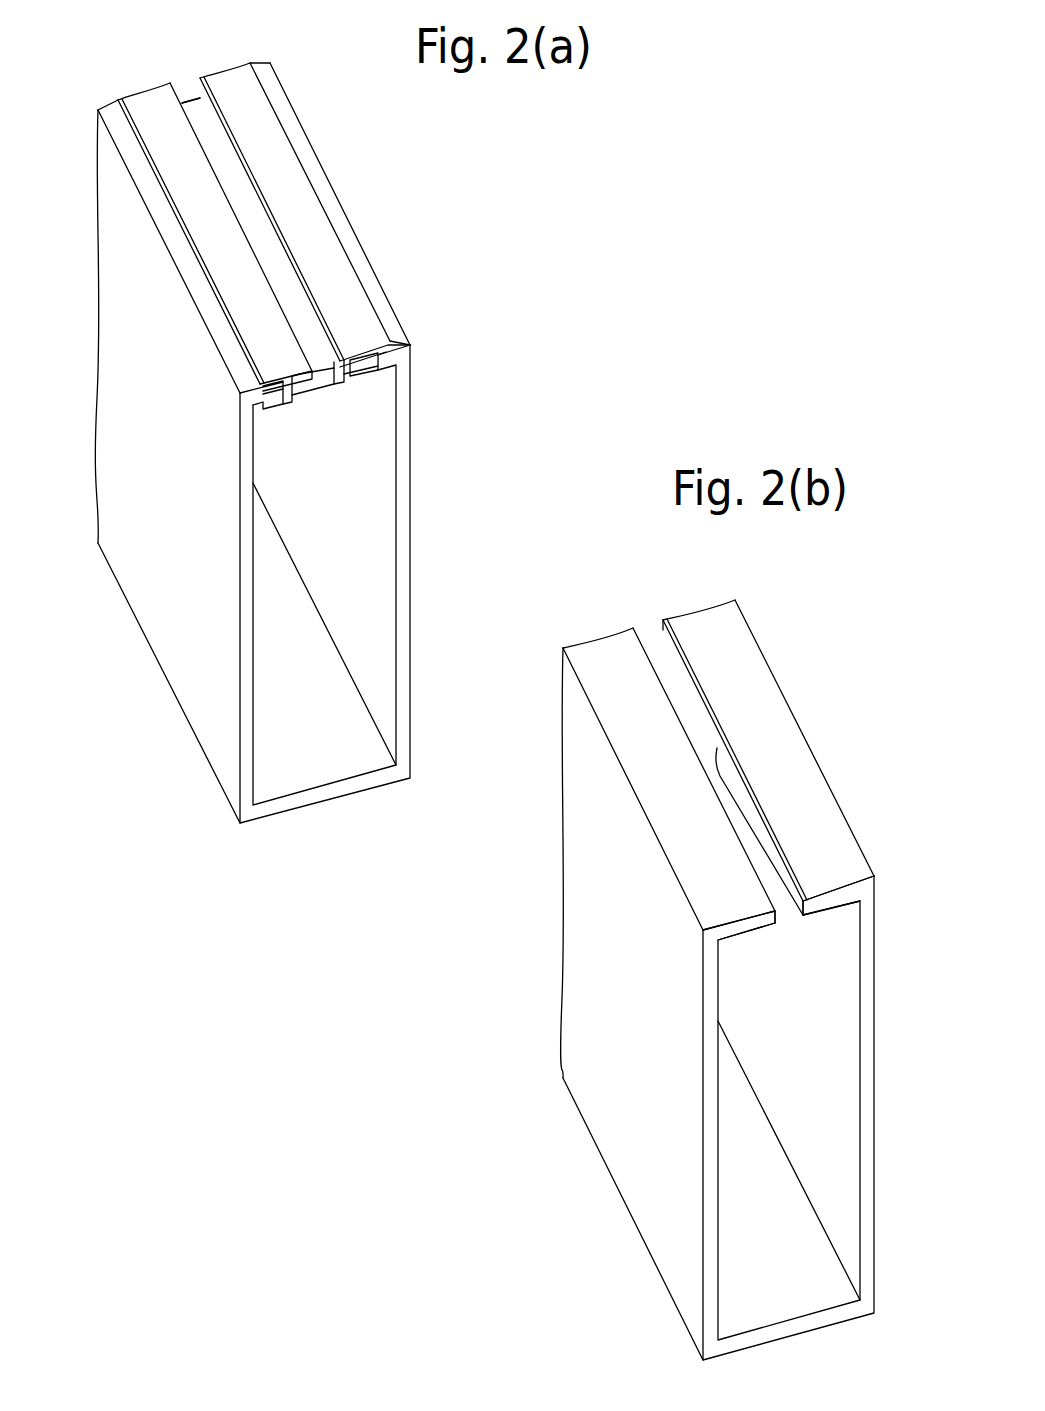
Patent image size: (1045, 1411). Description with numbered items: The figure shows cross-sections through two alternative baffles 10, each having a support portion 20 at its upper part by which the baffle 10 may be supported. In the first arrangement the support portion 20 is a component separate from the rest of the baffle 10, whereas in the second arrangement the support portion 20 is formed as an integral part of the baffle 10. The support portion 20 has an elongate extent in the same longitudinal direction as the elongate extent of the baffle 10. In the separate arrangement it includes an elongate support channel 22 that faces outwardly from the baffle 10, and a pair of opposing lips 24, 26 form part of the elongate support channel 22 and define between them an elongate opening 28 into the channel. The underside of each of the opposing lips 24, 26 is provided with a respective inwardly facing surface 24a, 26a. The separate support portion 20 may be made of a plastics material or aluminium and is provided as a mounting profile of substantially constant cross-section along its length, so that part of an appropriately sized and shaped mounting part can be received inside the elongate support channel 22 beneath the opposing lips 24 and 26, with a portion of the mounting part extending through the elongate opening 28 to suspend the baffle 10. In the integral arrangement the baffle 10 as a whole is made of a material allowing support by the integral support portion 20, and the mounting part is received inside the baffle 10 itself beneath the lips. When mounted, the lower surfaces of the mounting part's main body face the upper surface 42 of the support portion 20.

In FIG. 2A, the baffle 10 is at (208, 677).
In FIG. 2B, the baffle 10 is at (663, 1188).
In FIG. 2A, the support portion 20 is at (336, 232).
In FIG. 2B, the support portion 20 is at (801, 763).
In FIG. 2A, the elongate support channel 22 is at (332, 378).
In FIG. 2A, the opposing lip 24 is at (345, 358).
In FIG. 2B, the opposing lip 24 is at (820, 890).
In FIG. 2A, the inwardly facing surface 24a is at (357, 364).
In FIG. 2B, the inwardly facing surface 24a is at (823, 917).
In FIG. 2A, the opposing lip 26 is at (300, 385).
In FIG. 2B, the opposing lip 26 is at (758, 930).
In FIG. 2A, the inwardly facing surface 26a is at (300, 385).
In FIG. 2B, the inwardly facing surface 26a is at (758, 930).
In FIG. 2A, the elongate opening 28 is at (223, 160).
In FIG. 2B, the elongate opening 28 is at (673, 673).
In FIG. 2A, the upper surface 42 is at (165, 143).
In FIG. 2B, the upper surface 42 is at (683, 827).